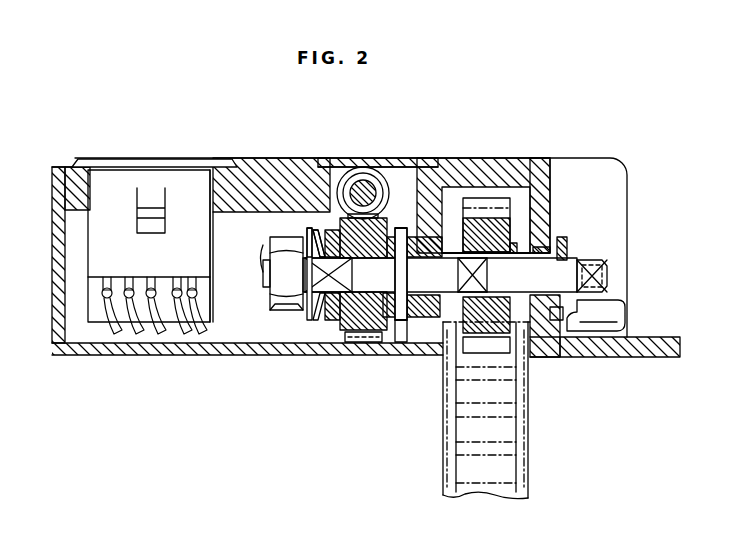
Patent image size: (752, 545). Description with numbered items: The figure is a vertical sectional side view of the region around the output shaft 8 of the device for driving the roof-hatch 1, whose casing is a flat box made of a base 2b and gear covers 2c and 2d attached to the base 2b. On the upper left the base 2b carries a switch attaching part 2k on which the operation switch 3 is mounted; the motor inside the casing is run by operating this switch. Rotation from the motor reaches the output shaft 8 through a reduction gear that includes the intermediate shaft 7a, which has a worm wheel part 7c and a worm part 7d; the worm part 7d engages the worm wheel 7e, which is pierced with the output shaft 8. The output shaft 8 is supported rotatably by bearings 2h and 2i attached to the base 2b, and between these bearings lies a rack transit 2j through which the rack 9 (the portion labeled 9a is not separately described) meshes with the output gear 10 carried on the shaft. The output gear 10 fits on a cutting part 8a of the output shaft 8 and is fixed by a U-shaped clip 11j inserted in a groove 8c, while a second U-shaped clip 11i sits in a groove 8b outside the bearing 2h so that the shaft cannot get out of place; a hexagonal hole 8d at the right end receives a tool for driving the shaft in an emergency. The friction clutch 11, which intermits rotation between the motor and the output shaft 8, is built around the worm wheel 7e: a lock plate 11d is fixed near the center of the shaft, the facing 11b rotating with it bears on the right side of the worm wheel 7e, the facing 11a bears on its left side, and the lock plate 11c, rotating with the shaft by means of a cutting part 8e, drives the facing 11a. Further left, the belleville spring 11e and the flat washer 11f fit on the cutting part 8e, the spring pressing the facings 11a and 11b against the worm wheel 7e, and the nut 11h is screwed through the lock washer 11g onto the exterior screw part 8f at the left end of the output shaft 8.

The device for driving the roof-hatch 1 is at (601, 158).
The base 2b is at (608, 342).
The gear cover 2c is at (388, 165).
The gear cover 2d is at (56, 330).
The bearing 2h is at (583, 310).
The bearing 2i is at (402, 321).
The rack transit 2j is at (528, 190).
The switch attaching part 2k is at (212, 200).
The operation switch 3 is at (170, 158).
The intermediate shaft 7a is at (343, 218).
The worm wheel part 7c is at (402, 176).
The worm part 7d is at (365, 168).
The worm wheel 7e is at (342, 343).
The output shaft 8 is at (440, 266).
The cutting part 8a is at (492, 218).
The groove 8b is at (603, 261).
The groove 8c is at (538, 312).
The hexagonal hole 8d is at (606, 283).
The cutting part 8e is at (270, 311).
The exterior screw part 8f is at (268, 262).
The rack 9 is at (528, 452).
The gear teeth 9a is at (467, 440).
The output gear 10 is at (471, 265).
The friction clutch 11 is at (338, 321).
The facing 11a is at (316, 343).
The facing 11b is at (396, 318).
The lock plate 11c is at (319, 320).
The lock plate 11d is at (406, 343).
The belleville spring 11e is at (309, 320).
The flat washer 11f is at (309, 228).
The lock washer 11g is at (306, 240).
The nut 11h is at (270, 262).
The U-shaped clip 11i is at (568, 244).
The U-shaped clip 11j is at (522, 232).